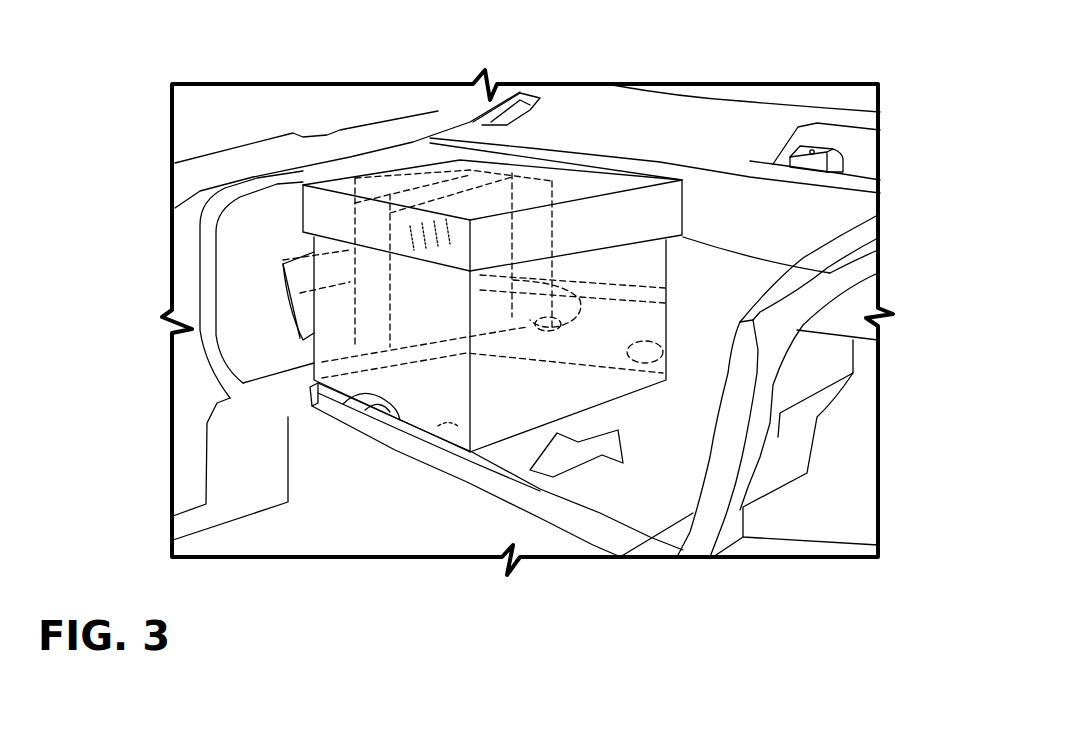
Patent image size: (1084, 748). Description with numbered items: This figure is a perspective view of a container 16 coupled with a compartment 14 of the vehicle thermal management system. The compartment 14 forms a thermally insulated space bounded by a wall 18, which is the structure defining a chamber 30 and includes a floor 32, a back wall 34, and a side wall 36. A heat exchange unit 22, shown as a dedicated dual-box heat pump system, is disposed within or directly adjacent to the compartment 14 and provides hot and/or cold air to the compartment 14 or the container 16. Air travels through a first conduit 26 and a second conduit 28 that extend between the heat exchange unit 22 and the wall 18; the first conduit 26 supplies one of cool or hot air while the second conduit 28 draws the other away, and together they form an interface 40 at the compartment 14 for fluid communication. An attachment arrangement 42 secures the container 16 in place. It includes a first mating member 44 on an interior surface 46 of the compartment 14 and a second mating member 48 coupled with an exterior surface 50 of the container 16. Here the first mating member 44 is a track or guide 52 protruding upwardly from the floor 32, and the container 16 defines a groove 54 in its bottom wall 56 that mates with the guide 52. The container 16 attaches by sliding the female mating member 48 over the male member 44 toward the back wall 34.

The compartment 14 is at (747, 163).
The container 16 is at (328, 181).
The wall 18 is at (880, 214).
The heat exchange unit 22 is at (405, 187).
The first conduit 26 is at (552, 243).
The second conduit 28 is at (699, 288).
The chamber 30 is at (659, 456).
The floor 32 is at (583, 488).
The back wall 34 is at (732, 277).
The side wall 36 is at (714, 395).
The interface 40 is at (672, 363).
The attachment arrangement 42 is at (558, 378).
The first mating member 44 is at (380, 423).
The interior surface 46 is at (640, 494).
The second mating member 48 is at (390, 390).
The exterior surface 50 is at (453, 435).
The guide 52 is at (312, 403).
The groove 54 is at (350, 314).
The bottom wall 56 is at (442, 422).